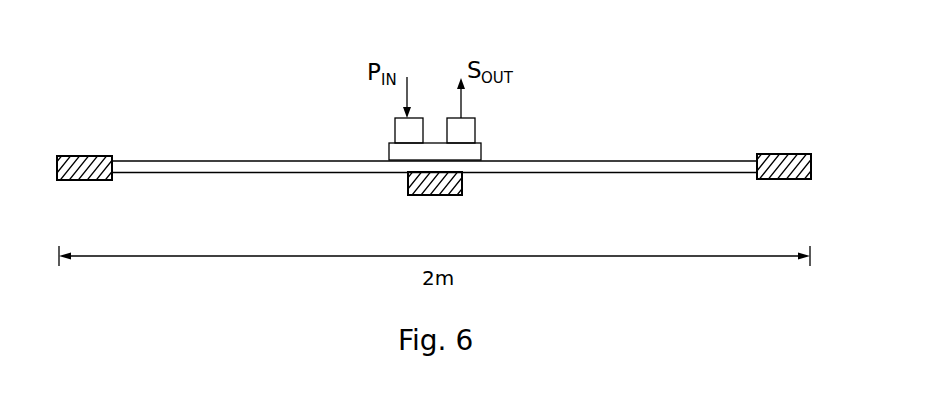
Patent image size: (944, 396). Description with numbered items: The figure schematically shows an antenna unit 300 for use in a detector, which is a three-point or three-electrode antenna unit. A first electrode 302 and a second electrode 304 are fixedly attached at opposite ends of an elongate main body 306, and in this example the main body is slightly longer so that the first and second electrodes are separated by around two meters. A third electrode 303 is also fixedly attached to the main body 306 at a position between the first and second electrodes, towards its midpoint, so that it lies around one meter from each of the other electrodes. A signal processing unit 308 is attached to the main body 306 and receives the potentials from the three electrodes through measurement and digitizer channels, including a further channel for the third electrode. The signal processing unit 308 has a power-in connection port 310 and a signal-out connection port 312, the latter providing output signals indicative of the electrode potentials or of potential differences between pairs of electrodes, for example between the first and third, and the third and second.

The antenna unit 300 is at (687, 88).
The first electrode 302 is at (92, 155).
The third electrode 303 is at (437, 197).
The second electrode 304 is at (783, 153).
The main body 306 is at (333, 173).
The signal processing unit 308 is at (482, 150).
The power-in connection port 310 is at (395, 130).
The signal-out connection port 312 is at (475, 124).